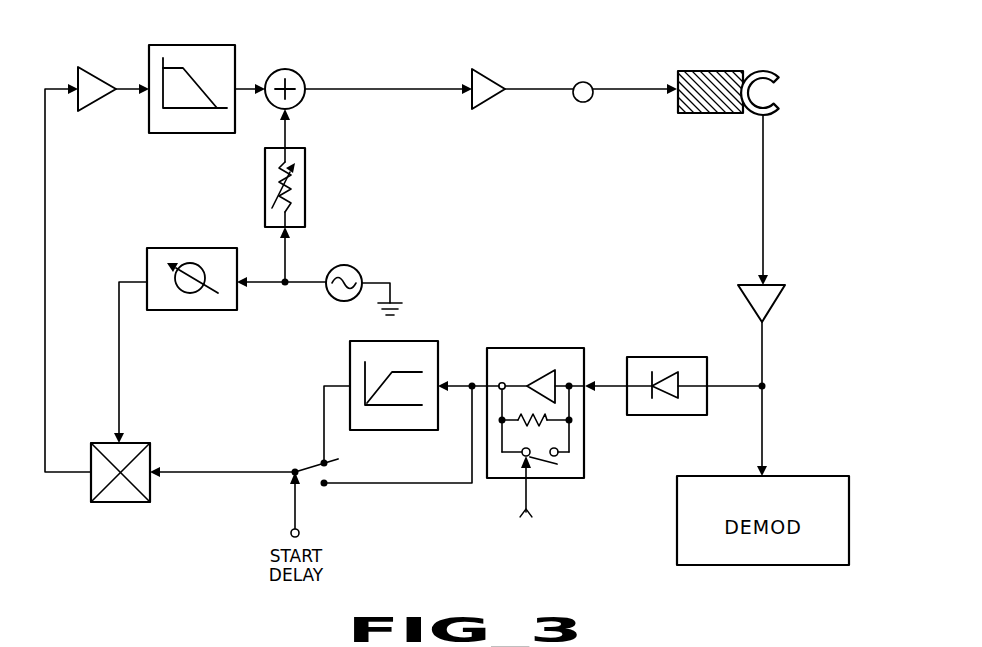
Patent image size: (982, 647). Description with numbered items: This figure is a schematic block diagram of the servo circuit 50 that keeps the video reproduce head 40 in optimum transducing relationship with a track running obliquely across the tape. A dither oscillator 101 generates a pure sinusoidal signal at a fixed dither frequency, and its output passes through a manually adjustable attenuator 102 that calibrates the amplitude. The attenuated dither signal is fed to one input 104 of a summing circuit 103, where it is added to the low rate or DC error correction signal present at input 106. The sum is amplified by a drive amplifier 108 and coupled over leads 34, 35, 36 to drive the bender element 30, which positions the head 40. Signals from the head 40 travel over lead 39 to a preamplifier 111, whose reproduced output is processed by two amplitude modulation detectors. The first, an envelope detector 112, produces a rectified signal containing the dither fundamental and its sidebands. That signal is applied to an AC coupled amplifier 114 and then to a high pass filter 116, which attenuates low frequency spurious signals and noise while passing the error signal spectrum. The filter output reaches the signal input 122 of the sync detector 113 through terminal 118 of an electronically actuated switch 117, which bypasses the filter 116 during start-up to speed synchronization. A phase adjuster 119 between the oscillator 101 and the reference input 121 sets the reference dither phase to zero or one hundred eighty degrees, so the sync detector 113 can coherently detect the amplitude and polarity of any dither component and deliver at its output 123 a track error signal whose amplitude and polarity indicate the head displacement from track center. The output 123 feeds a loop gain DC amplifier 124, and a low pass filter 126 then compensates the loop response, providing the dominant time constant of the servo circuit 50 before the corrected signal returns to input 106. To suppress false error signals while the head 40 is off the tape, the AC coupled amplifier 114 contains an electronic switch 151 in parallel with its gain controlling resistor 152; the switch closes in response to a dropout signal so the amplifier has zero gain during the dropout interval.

The bender element 30 is at (700, 108).
The lead 34 is at (618, 68).
The lead 35 is at (618, 68).
The lead 36 is at (586, 76).
The lead 39 is at (763, 183).
The head 40 is at (775, 70).
The servo circuit 50 is at (574, 214).
The dither oscillator 101 is at (343, 265).
The adjustable attenuator 102 is at (305, 187).
The summing circuit 103 is at (293, 78).
The input 104 is at (288, 132).
The input 106 is at (248, 85).
The drive amplifier 108 is at (488, 83).
The preamplifier 111 is at (767, 302).
The envelope detector 112 is at (667, 360).
The sync detector 113 is at (133, 448).
The AC coupled amplifier 114 is at (560, 430).
The high pass filter 116 is at (420, 345).
The electronically actuated switch 117 is at (303, 456).
The terminal 118 is at (372, 436).
The phase adjuster 119 is at (200, 253).
The reference input 121 is at (119, 361).
The input 122 is at (203, 475).
The output 123 is at (45, 193).
The loop gain DC amplifier 124 is at (97, 73).
The low pass filter 126 is at (203, 50).
The electronic switch 151 is at (542, 459).
The gain controlling resistor 152 is at (547, 417).